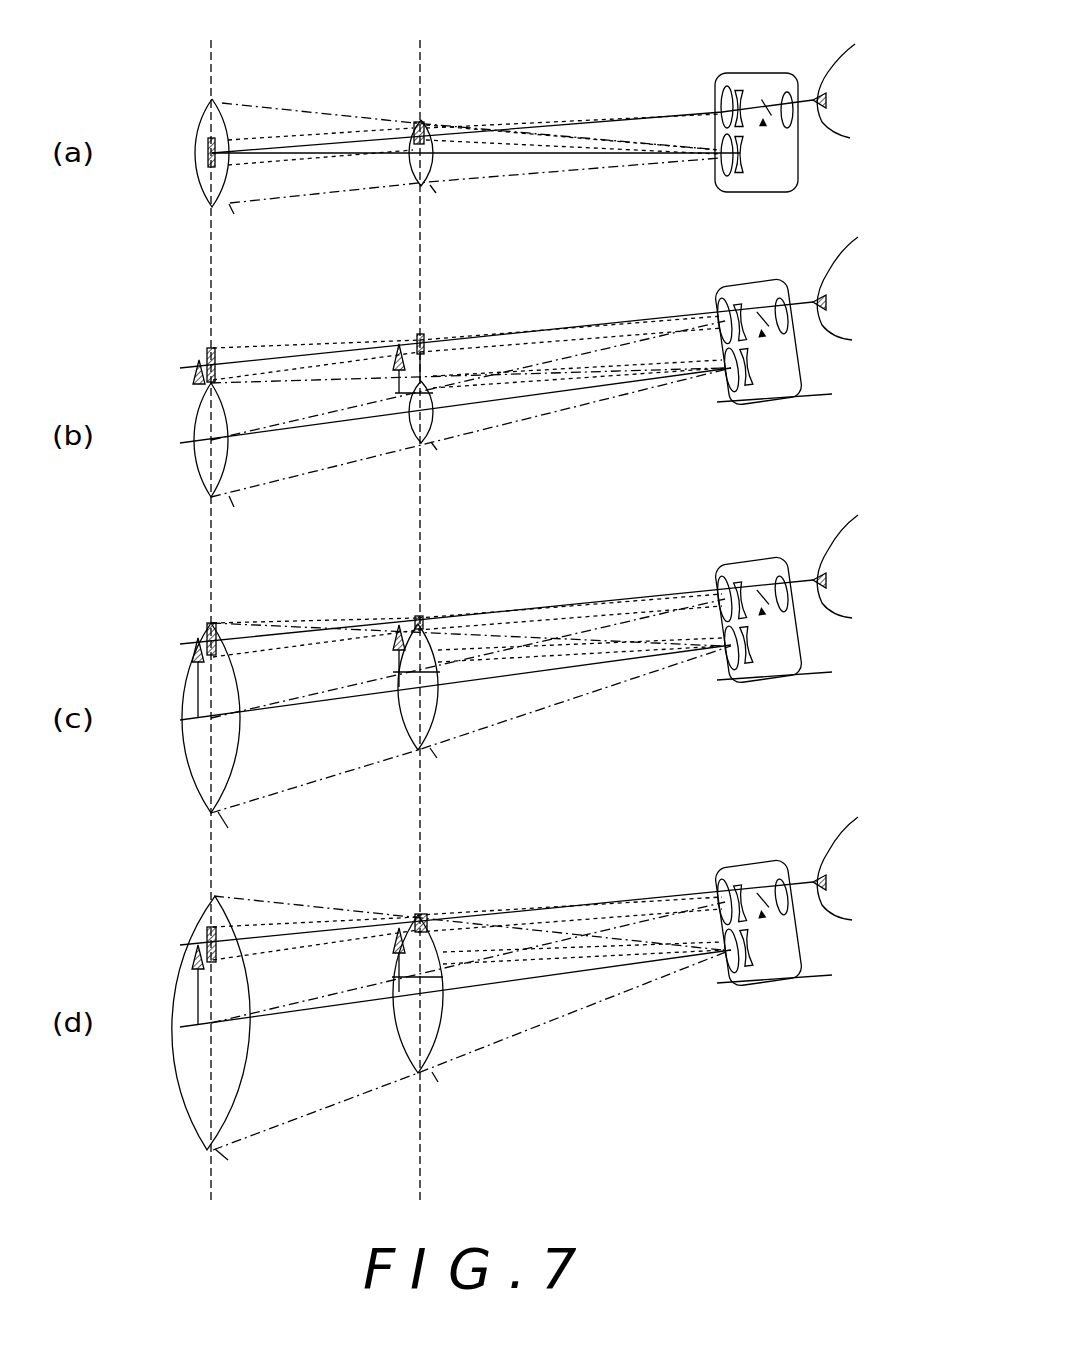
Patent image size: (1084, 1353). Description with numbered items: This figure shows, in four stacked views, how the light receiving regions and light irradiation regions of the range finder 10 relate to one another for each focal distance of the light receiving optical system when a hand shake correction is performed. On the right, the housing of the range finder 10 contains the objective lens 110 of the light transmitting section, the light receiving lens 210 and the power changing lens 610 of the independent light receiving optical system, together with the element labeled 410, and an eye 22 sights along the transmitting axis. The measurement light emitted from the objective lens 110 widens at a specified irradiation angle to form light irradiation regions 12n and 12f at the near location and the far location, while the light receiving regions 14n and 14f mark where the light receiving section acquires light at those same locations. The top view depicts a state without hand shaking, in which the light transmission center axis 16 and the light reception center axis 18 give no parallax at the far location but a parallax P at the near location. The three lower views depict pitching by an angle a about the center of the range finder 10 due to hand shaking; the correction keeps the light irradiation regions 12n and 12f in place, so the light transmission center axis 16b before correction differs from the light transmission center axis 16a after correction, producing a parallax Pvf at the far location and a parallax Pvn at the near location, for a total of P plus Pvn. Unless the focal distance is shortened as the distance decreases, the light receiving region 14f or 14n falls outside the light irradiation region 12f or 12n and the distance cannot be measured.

The range finder 10 is at (808, 65).
The light irradiation region 12f is at (200, 136).
The light irradiation region 12n is at (437, 120).
The light receiving region 14f is at (234, 214).
The light receiving region 14n is at (436, 193).
The light transmission center axis 16 is at (630, 117).
The light transmission center axis 16a is at (582, 329).
The light transmission center axis 16b is at (625, 347).
The light reception center axis 18 is at (626, 156).
The eye 22 is at (846, 468).
The objective lens 110 is at (722, 90).
The light receiving lens 210 is at (722, 170).
The fourth lens 410 is at (738, 86).
The power changing lens 610 is at (740, 178).
The parallax P is at (402, 130).
The parallax Pvf is at (190, 403).
The parallax Pvn is at (397, 372).
The angle a is at (783, 688).